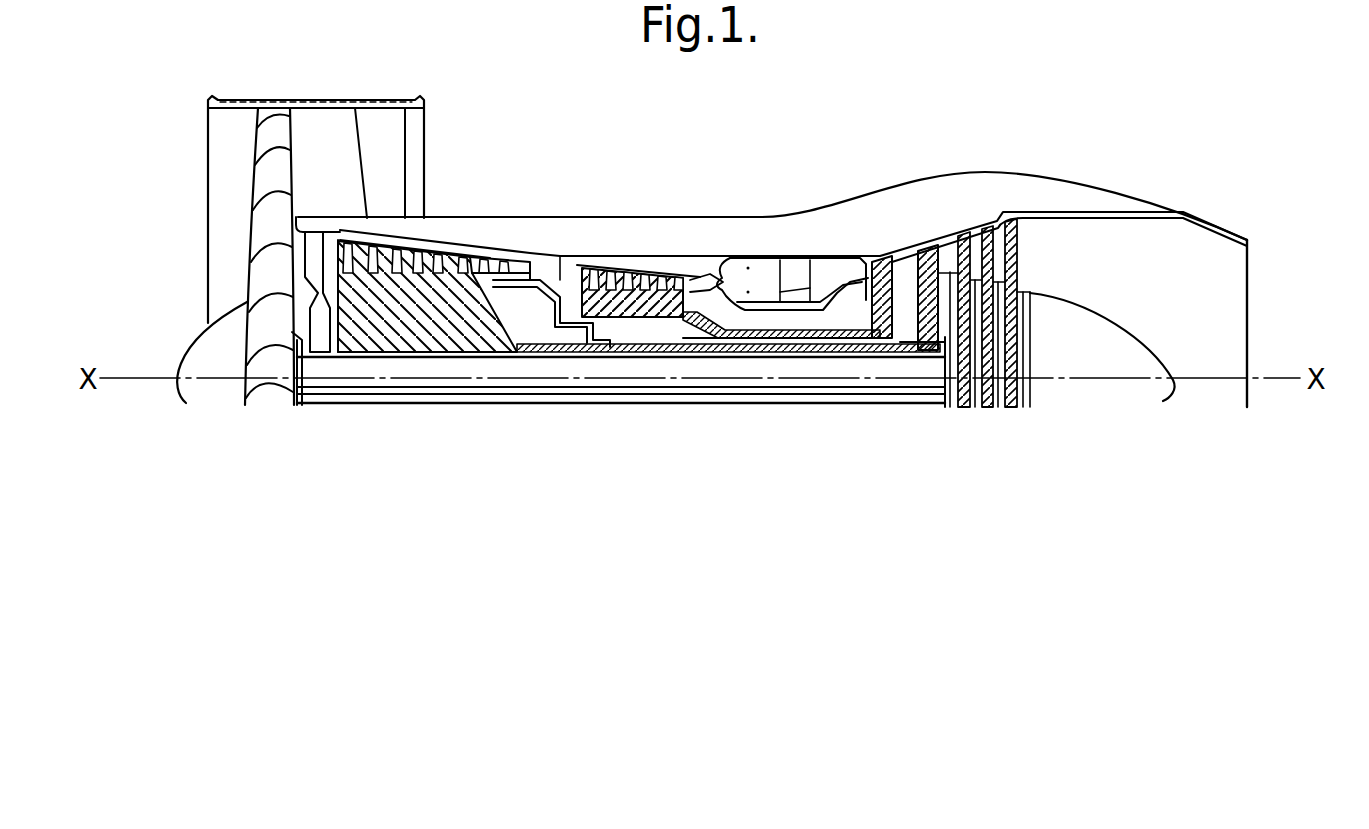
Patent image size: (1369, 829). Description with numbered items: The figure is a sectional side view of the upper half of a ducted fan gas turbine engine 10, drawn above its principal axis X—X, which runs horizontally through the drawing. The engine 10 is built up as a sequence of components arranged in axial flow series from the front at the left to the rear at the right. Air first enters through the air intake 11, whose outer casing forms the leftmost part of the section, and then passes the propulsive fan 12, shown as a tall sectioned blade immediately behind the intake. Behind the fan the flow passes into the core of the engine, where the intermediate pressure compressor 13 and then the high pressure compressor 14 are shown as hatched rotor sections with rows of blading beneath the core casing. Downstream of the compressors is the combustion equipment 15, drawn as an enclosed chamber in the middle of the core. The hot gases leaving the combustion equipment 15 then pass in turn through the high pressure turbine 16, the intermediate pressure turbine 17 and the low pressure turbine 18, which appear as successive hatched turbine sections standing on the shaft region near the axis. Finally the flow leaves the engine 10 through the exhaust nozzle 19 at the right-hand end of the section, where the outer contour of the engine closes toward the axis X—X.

The ducted fan gas turbine engine 10 is at (579, 170).
The air intake 11 is at (195, 225).
The propulsive fan 12 is at (273, 140).
The intermediate pressure compressor 13 is at (414, 303).
The high pressure compressor 14 is at (628, 272).
The combustion equipment 15 is at (799, 243).
The high pressure turbine 16 is at (882, 262).
The intermediate pressure turbine 17 is at (928, 258).
The low pressure turbine 18 is at (1012, 232).
The exhaust nozzle 19 is at (1226, 323).